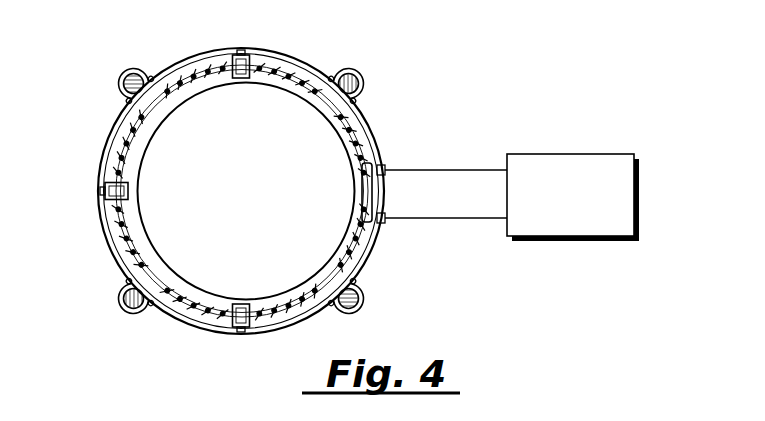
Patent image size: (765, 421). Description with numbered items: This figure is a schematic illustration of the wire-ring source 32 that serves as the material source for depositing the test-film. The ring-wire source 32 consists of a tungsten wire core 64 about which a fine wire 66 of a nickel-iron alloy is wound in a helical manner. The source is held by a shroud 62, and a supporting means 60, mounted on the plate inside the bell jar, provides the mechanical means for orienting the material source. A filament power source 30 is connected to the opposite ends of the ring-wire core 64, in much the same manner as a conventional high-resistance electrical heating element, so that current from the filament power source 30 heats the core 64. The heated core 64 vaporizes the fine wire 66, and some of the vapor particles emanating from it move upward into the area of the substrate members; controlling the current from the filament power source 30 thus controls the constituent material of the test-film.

The filament power source 30 is at (555, 154).
The wire-ring source 32 is at (276, 174).
The supporting means 60 is at (357, 75).
The shroud 62 is at (117, 237).
The tungsten wire core 64 is at (158, 100).
The fine wire of nickel-iron alloy 66 is at (122, 142).